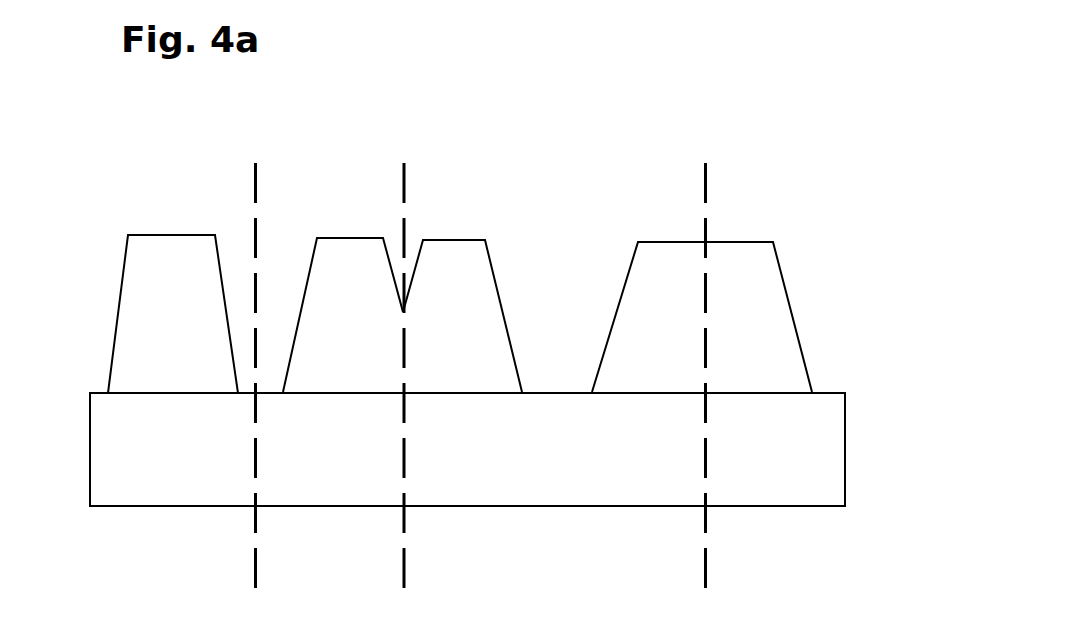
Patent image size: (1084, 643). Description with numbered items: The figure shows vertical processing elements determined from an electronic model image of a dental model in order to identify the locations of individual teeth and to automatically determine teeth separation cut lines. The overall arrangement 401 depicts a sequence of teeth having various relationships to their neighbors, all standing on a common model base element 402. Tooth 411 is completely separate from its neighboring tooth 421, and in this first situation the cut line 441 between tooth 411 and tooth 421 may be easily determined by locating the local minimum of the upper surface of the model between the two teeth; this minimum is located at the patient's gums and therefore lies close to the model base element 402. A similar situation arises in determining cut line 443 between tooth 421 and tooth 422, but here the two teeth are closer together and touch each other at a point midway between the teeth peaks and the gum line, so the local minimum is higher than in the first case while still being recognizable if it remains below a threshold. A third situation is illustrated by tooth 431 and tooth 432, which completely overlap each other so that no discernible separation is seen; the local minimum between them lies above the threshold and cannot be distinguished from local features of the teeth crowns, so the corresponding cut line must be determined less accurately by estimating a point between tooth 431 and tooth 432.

The photomask / patterned structure 401 is at (708, 83).
The model base element 402 is at (425, 449).
The tooth 411 is at (137, 294).
The tooth 421 is at (331, 294).
The tooth 422 is at (478, 285).
The tooth 431 is at (633, 302).
The tooth 432 is at (777, 305).
The cut line 441 is at (175, 376).
The cut line 443 is at (613, 558).